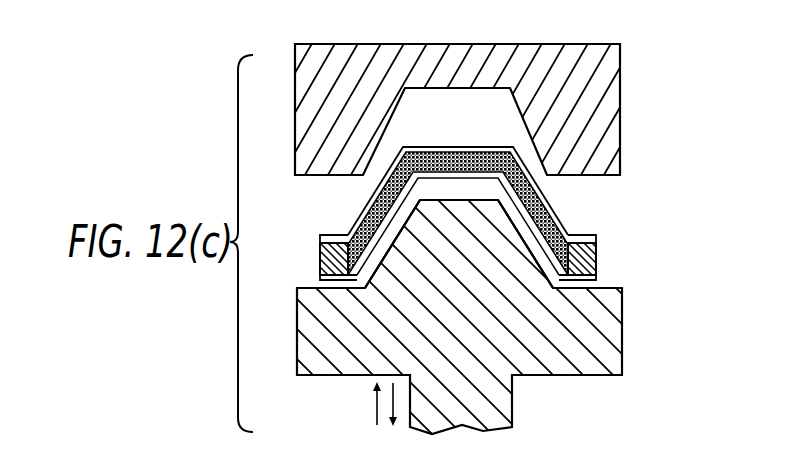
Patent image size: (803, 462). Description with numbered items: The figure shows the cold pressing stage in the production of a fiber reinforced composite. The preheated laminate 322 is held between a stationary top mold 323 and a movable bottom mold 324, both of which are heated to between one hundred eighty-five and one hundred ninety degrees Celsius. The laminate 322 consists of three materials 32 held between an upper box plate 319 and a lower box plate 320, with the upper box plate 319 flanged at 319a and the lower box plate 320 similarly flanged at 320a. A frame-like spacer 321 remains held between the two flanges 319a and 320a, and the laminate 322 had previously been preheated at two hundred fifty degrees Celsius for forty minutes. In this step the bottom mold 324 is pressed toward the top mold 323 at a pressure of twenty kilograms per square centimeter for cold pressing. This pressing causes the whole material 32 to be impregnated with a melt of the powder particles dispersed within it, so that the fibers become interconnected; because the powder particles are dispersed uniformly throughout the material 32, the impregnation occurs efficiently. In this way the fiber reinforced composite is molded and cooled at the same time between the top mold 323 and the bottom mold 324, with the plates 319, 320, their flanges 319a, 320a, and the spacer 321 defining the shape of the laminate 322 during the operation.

The material 32 is at (445, 150).
The upper box plate 319 is at (512, 147).
The flange 319a is at (338, 235).
The lower box plate 320 is at (443, 180).
The flange 320a is at (337, 280).
The spacer 321 is at (323, 257).
The laminate 322 is at (560, 204).
The stationary top mold 323 is at (605, 83).
The movable bottom mold 324 is at (595, 338).